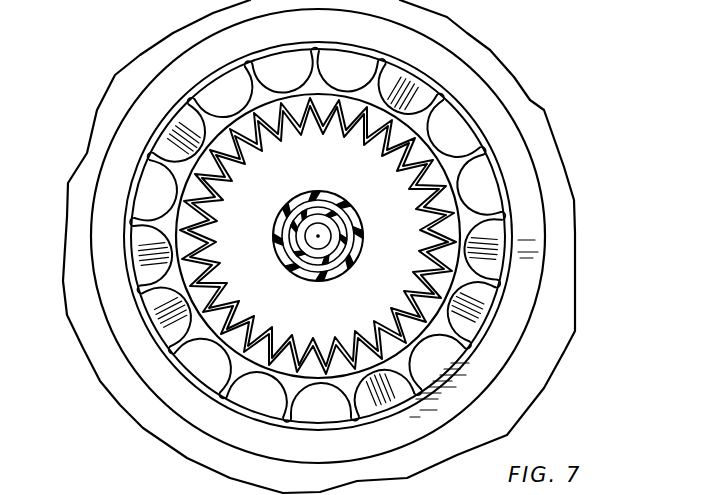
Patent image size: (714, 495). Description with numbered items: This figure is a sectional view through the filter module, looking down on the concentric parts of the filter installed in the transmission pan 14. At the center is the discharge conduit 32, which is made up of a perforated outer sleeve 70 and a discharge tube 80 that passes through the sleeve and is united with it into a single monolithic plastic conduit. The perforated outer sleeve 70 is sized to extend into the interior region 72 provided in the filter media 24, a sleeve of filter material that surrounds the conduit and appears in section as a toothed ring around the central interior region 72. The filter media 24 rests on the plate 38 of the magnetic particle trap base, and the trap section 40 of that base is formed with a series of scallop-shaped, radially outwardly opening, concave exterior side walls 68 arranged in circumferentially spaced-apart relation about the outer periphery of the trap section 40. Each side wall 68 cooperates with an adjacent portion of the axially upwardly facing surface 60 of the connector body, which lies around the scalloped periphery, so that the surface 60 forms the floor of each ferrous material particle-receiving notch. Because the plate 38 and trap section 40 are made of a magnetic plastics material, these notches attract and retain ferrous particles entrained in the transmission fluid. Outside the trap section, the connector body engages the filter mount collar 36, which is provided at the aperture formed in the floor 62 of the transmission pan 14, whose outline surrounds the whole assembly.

The transmission pan 14 is at (360, 246).
The filter media 24 is at (413, 236).
The discharge conduit 32 is at (369, 235).
The filter mount collar 36 is at (377, 234).
The plate 38 is at (284, 311).
The trap section 40 is at (452, 93).
The axially upwardly facing surface 60 is at (140, 258).
The floor 62 is at (371, 236).
The exterior side walls 68 is at (208, 345).
The perforated outer sleeve 70 is at (338, 277).
The interior region 72 is at (406, 236).
The discharge tube 80 is at (296, 223).